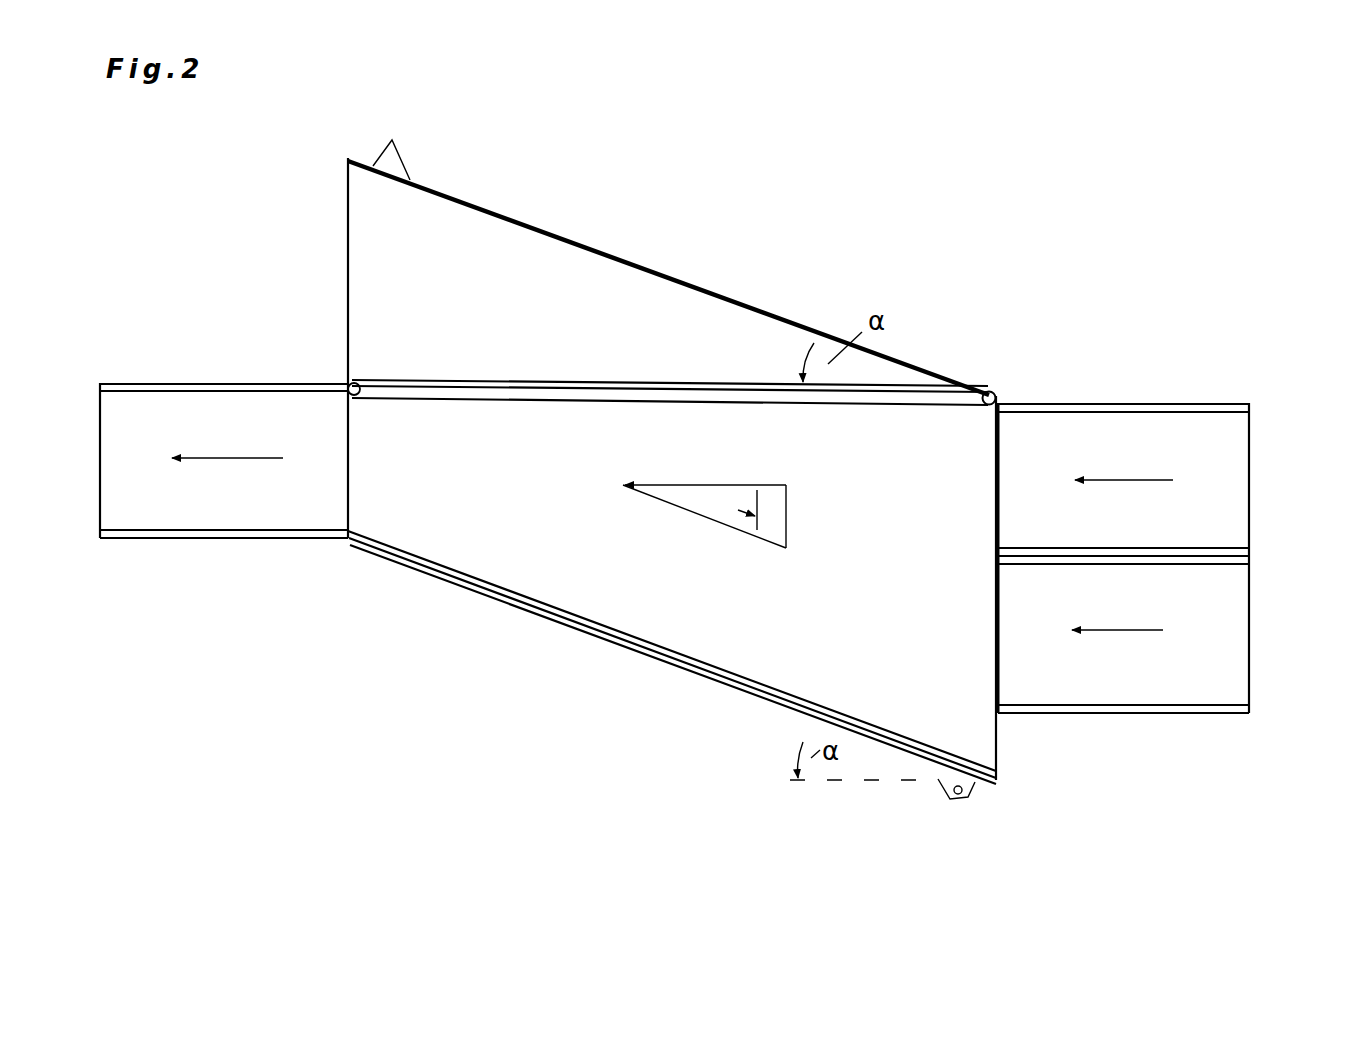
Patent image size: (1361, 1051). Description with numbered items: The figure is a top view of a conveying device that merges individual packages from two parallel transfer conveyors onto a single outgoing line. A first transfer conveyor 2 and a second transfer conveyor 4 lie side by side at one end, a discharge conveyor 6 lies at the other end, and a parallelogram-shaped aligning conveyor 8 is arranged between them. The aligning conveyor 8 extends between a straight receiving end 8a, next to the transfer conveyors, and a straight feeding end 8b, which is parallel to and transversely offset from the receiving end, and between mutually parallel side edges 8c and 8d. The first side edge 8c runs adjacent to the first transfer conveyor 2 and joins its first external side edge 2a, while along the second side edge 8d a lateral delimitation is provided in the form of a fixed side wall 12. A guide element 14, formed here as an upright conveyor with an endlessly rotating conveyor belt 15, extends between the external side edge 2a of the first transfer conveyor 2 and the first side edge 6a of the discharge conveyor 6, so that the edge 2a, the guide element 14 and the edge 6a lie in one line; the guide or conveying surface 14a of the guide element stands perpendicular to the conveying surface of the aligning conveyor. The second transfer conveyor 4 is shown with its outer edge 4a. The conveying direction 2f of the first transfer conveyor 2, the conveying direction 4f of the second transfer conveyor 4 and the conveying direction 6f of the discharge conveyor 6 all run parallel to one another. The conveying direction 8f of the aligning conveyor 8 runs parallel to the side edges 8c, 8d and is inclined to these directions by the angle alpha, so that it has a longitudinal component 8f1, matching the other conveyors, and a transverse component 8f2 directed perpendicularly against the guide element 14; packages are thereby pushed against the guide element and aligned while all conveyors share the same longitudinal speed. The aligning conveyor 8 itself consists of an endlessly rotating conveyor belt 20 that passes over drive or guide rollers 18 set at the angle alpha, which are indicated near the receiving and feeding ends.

The first transfer conveyor 2 is at (1159, 531).
The first external side edge 2a is at (1138, 404).
The conveying direction 2f is at (1112, 480).
The second transfer conveyor 4 is at (1161, 692).
The wall of second housing module 4a is at (1148, 706).
The conveying direction 4f is at (1110, 630).
The discharge conveyor 6 is at (224, 469).
The first side edge 6a is at (230, 380).
The conveying direction 6f is at (217, 458).
The aligning conveyor 8 is at (681, 471).
The receiving end 8a is at (1000, 740).
The feeding end 8b is at (343, 352).
The first side edge 8c is at (733, 298).
The second side edge 8d is at (662, 672).
The conveying direction 8f is at (742, 522).
The longitudinal component 8f1 is at (707, 485).
The transverse component 8f2 is at (790, 526).
The fixed side wall 12 is at (560, 632).
The guide element 14 is at (672, 305).
The guide or conveying surface 14a is at (568, 408).
The conveyor belt 15 is at (851, 404).
The drive or guide rollers 18 is at (383, 150).
The conveyor belt 20 is at (478, 495).